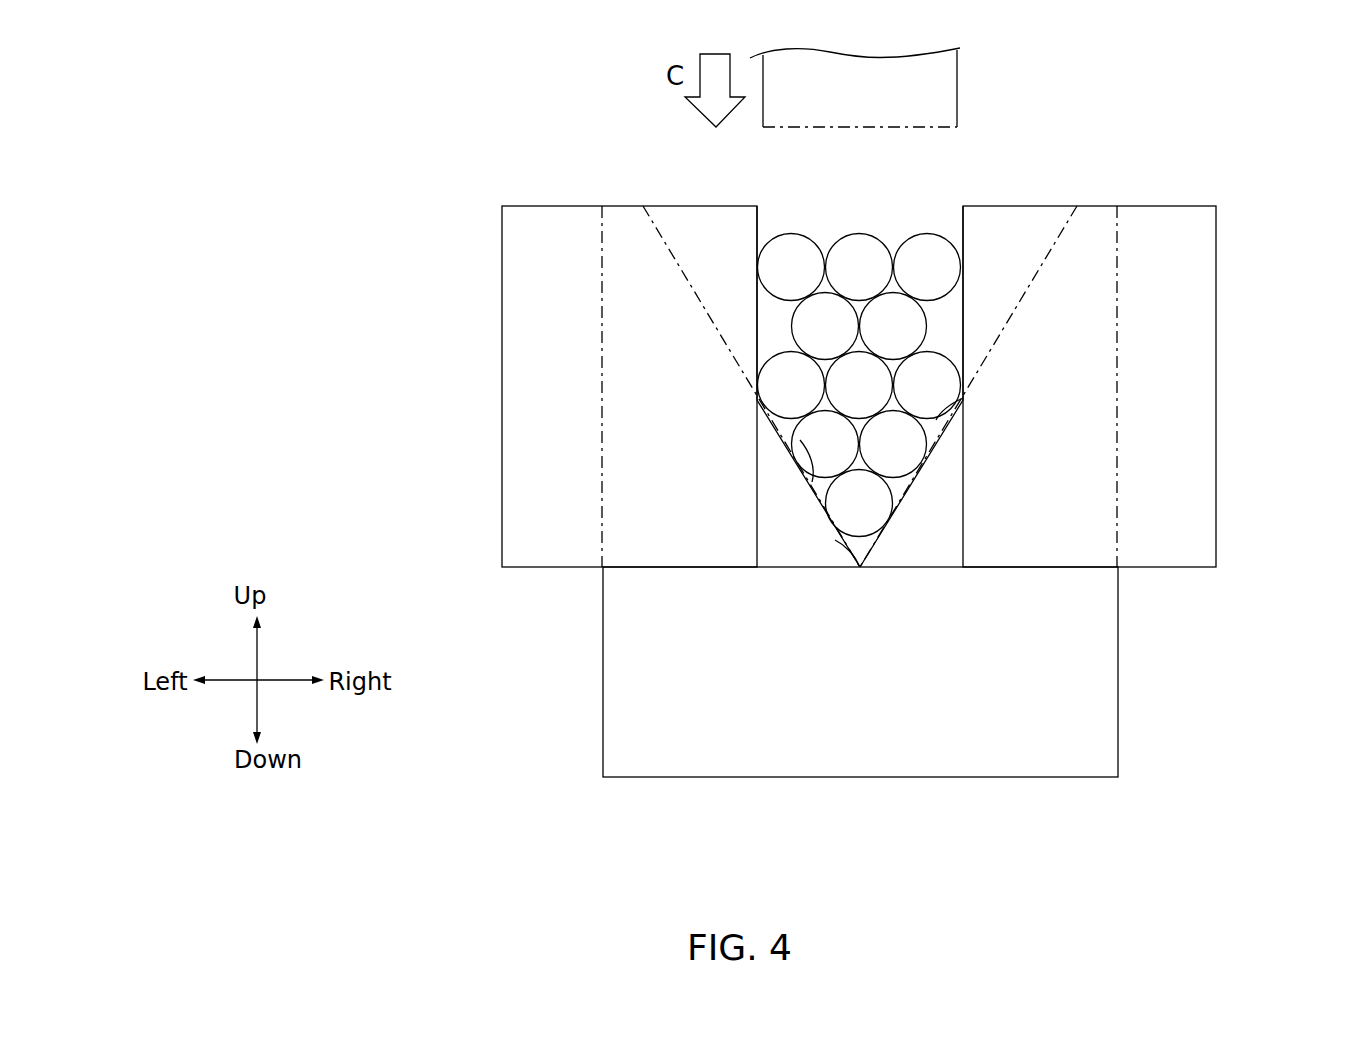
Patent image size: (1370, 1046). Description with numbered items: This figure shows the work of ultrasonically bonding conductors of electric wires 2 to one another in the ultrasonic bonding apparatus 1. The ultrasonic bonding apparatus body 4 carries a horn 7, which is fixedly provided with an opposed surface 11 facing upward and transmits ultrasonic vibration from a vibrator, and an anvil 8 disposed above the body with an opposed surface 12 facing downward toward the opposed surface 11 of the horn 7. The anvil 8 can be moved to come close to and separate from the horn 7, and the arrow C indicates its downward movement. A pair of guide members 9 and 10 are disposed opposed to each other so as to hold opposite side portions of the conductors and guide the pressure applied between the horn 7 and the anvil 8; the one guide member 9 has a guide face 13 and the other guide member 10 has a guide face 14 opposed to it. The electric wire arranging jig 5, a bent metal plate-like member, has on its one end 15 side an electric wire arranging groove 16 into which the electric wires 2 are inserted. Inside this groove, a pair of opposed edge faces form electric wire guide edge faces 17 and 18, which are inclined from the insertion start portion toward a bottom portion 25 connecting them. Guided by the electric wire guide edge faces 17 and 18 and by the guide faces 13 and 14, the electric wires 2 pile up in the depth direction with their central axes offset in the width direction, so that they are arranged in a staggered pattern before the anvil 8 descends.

The ultrasonic bonding apparatus 1 is at (1290, 127).
The electric wires 2 is at (860, 226).
The ultrasonic bonding apparatus body 4 is at (1148, 180).
The electric wire arranging jig 5 is at (596, 272).
The horn 7 is at (1118, 668).
The anvil 8 is at (966, 82).
The guide member 9 is at (1216, 420).
The guide member 10 is at (502, 413).
The opposed surface 11 is at (1020, 567).
The opposed surface 12 is at (921, 128).
The guide face 13 is at (958, 240).
The guide face 14 is at (762, 240).
The one end 15 is at (1096, 206).
The electric wire arranging groove 16 is at (704, 298).
The electric wire guide edge face 17 is at (963, 398).
The electric wire guide edge face 18 is at (800, 440).
The bottom portion 25 is at (835, 540).